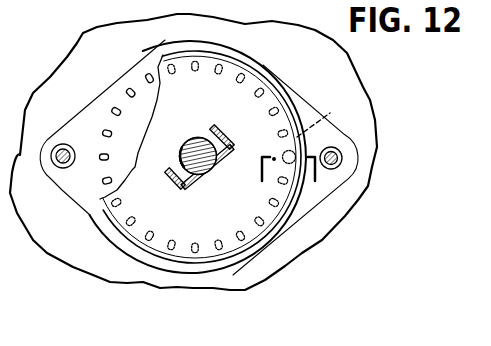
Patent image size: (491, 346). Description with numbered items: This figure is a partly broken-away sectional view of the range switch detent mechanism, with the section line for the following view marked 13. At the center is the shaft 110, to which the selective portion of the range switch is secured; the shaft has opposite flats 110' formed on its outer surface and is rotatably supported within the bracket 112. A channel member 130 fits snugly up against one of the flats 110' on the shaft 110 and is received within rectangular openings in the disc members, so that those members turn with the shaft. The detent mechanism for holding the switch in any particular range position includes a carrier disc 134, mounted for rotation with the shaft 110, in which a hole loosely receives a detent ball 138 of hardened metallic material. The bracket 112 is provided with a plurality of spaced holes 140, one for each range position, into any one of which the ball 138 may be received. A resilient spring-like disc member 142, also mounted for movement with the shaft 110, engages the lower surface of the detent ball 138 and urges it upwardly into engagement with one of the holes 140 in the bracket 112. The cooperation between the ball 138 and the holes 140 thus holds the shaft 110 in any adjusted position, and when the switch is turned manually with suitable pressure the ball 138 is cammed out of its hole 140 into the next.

The shaft 110 is at (202, 131).
The opposite flats 110' is at (199, 158).
The bracket 112 is at (86, 121).
The channel member 130 is at (184, 198).
The carrier disc 134 is at (278, 87).
The detent ball 138 is at (324, 114).
The spaced holes 140 is at (151, 69).
The resilient spring-like disc member 142 is at (242, 248).
The section line 13- 13 is at (284, 182).